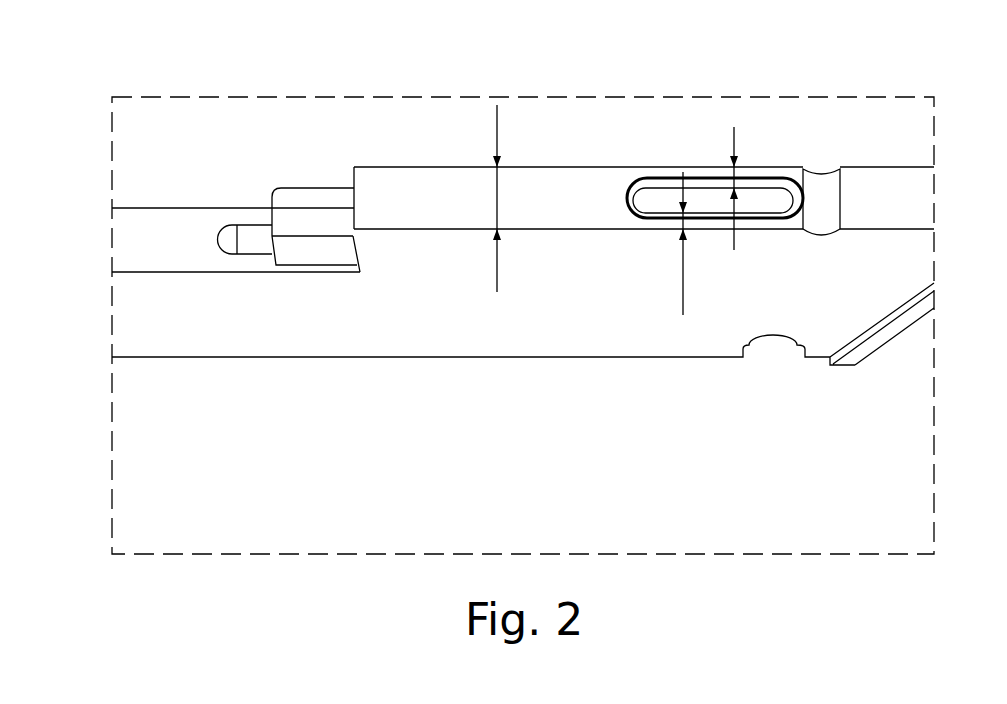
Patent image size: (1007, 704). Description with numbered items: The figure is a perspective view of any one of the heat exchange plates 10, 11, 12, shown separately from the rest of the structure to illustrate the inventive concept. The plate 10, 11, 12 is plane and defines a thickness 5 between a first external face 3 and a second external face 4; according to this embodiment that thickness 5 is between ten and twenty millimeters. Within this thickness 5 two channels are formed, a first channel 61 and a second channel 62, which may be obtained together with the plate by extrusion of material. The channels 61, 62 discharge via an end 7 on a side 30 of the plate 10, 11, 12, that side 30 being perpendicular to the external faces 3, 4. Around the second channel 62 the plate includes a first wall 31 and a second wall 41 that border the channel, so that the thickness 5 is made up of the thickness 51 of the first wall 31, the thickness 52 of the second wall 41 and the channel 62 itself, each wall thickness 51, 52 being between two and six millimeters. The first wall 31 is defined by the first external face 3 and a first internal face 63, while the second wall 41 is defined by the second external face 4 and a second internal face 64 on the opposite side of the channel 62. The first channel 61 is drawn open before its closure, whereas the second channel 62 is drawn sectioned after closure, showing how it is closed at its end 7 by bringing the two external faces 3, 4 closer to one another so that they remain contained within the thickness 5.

The heat exchange plate 10 is at (492, 291).
The heat exchange plate 11 is at (492, 291).
The heat exchange plate 12 is at (104, 116).
The first external face 3 is at (603, 165).
The side of the plate 30 is at (440, 182).
The first wall 31 is at (245, 232).
The second external face 4 is at (438, 322).
The second wall 41 is at (248, 260).
The thickness of the plate 5 is at (497, 120).
The thickness of the first wall 51 is at (734, 137).
The thickness of the second wall 52 is at (682, 263).
The end of the channel 7 is at (307, 197).
The first channel 61 is at (713, 200).
The second channel 62 is at (238, 218).
The first internal face 63 is at (806, 233).
The second internal face 64 is at (655, 210).